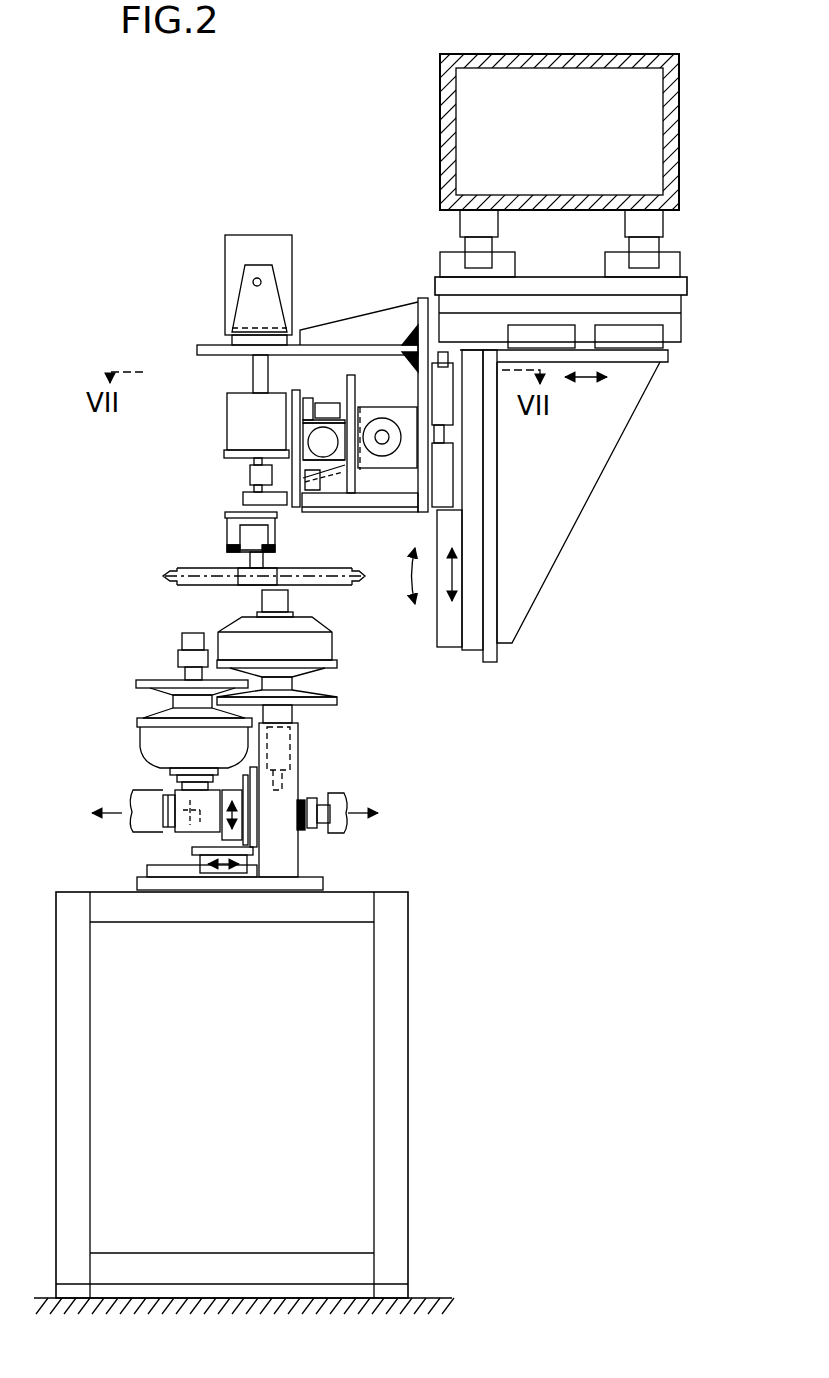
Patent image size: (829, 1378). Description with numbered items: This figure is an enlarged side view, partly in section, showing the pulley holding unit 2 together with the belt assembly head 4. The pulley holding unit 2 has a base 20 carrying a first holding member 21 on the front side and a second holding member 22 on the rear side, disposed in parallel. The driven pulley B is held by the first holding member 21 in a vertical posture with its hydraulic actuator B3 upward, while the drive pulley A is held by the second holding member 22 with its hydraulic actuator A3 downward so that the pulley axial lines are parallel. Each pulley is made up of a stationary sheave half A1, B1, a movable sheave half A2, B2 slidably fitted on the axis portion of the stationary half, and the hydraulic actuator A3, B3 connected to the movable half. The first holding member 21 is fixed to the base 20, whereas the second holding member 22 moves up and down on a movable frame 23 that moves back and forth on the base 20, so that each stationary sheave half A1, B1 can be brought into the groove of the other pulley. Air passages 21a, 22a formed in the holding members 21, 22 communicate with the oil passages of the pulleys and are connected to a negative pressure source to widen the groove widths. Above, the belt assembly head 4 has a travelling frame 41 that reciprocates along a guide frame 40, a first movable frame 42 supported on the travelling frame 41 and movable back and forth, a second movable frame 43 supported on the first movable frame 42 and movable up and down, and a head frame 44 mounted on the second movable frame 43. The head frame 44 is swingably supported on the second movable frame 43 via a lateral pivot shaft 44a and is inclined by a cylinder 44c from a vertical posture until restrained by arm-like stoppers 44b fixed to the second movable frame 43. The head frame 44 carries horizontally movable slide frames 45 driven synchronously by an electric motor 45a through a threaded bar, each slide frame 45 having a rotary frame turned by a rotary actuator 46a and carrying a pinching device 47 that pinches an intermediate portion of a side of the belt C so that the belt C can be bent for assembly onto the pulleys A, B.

The pulley holding unit 2 is at (370, 783).
The belt assembly head 4 is at (210, 400).
The base 20 is at (237, 883).
The first holding member 21 is at (290, 855).
The air passage 21a is at (297, 782).
The second holding member 22 is at (180, 835).
The air passage 22a is at (188, 838).
The movable frame 23 is at (260, 850).
The guide frame 40 is at (440, 106).
The travelling frame 41 is at (680, 282).
The first movable frame 42 is at (585, 487).
The second movable frame 43 is at (424, 298).
The head frame 44 is at (352, 373).
The lateral pivot shaft 44a is at (383, 433).
The arm-like stoppers 44b is at (368, 507).
The cylinder 44c is at (233, 268).
The slide frame 45 is at (227, 453).
The electric motor 45a is at (322, 437).
The rotary actuator 46a is at (237, 417).
The pinching device 47 is at (278, 567).
The drive pulley A is at (154, 709).
The stationary sheave half A1 is at (152, 680).
The movable sheave half A2 is at (150, 715).
The hydraulic actuator A3 is at (140, 745).
The driven pulley B is at (317, 673).
The stationary sheave half B1 is at (333, 705).
The movable sheave half B2 is at (320, 673).
The hydraulic actuator B3 is at (325, 642).
The belt C is at (192, 568).